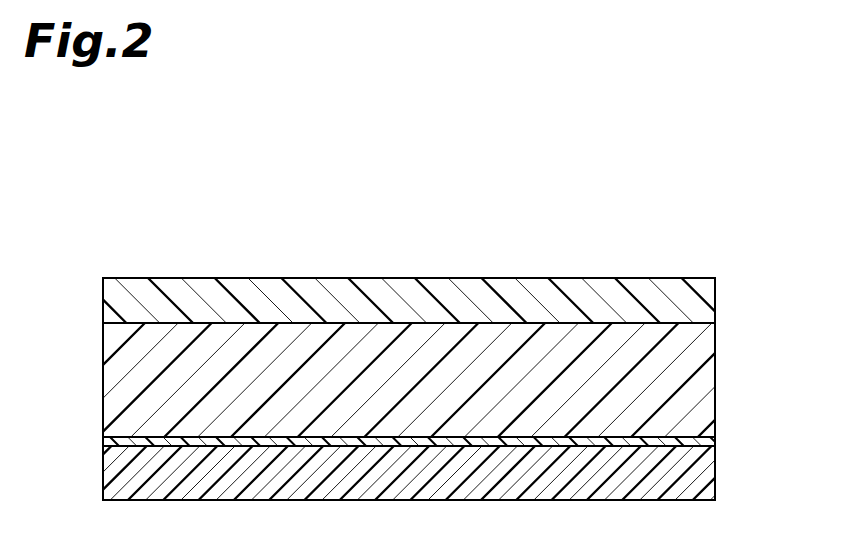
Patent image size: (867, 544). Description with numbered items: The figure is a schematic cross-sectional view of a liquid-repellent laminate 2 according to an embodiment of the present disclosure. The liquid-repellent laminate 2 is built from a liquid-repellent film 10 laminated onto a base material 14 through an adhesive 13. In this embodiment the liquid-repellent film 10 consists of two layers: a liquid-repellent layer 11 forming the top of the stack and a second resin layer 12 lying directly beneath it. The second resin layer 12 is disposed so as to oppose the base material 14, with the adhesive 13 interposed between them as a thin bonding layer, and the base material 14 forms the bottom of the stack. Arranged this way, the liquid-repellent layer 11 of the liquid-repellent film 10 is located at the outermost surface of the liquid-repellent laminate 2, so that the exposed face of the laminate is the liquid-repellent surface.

The liquid-repellent laminate 2 is at (696, 217).
The liquid-repellent film 10 is at (788, 277).
The liquid-repellent layer 11 is at (716, 286).
The second resin layer 12 is at (716, 379).
The adhesive 13 is at (716, 438).
The base material 14 is at (716, 487).